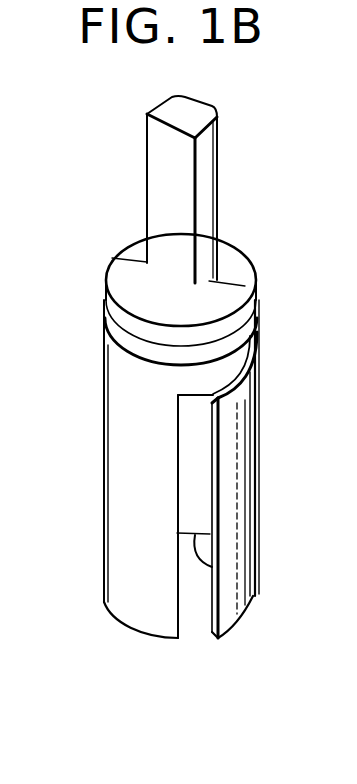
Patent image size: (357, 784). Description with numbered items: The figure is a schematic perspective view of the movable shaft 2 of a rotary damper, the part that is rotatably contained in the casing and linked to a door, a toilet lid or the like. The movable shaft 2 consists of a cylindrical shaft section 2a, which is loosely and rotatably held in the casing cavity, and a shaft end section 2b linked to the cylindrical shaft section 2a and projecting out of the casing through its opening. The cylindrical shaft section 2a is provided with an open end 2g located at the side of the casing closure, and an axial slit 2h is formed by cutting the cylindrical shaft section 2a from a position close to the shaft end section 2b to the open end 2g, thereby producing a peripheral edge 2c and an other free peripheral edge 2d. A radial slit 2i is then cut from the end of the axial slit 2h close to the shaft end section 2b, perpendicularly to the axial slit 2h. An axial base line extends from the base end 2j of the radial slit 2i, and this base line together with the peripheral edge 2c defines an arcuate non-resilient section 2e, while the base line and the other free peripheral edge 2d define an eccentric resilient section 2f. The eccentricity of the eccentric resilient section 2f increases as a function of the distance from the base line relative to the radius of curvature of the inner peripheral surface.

The movable shaft 2 is at (218, 198).
The cylindrical shaft section 2a is at (103, 478).
The shaft end section 2b is at (146, 188).
The peripheral edge 2c is at (188, 496).
The other free peripheral edge 2d is at (218, 508).
The arcuate non-resilient section 2e is at (127, 412).
The eccentric resilient section 2f is at (233, 470).
The open end 2g is at (222, 567).
The axial slit 2h is at (191, 608).
The radial slit 2i is at (242, 398).
The base end of the radial slit 2j is at (258, 359).